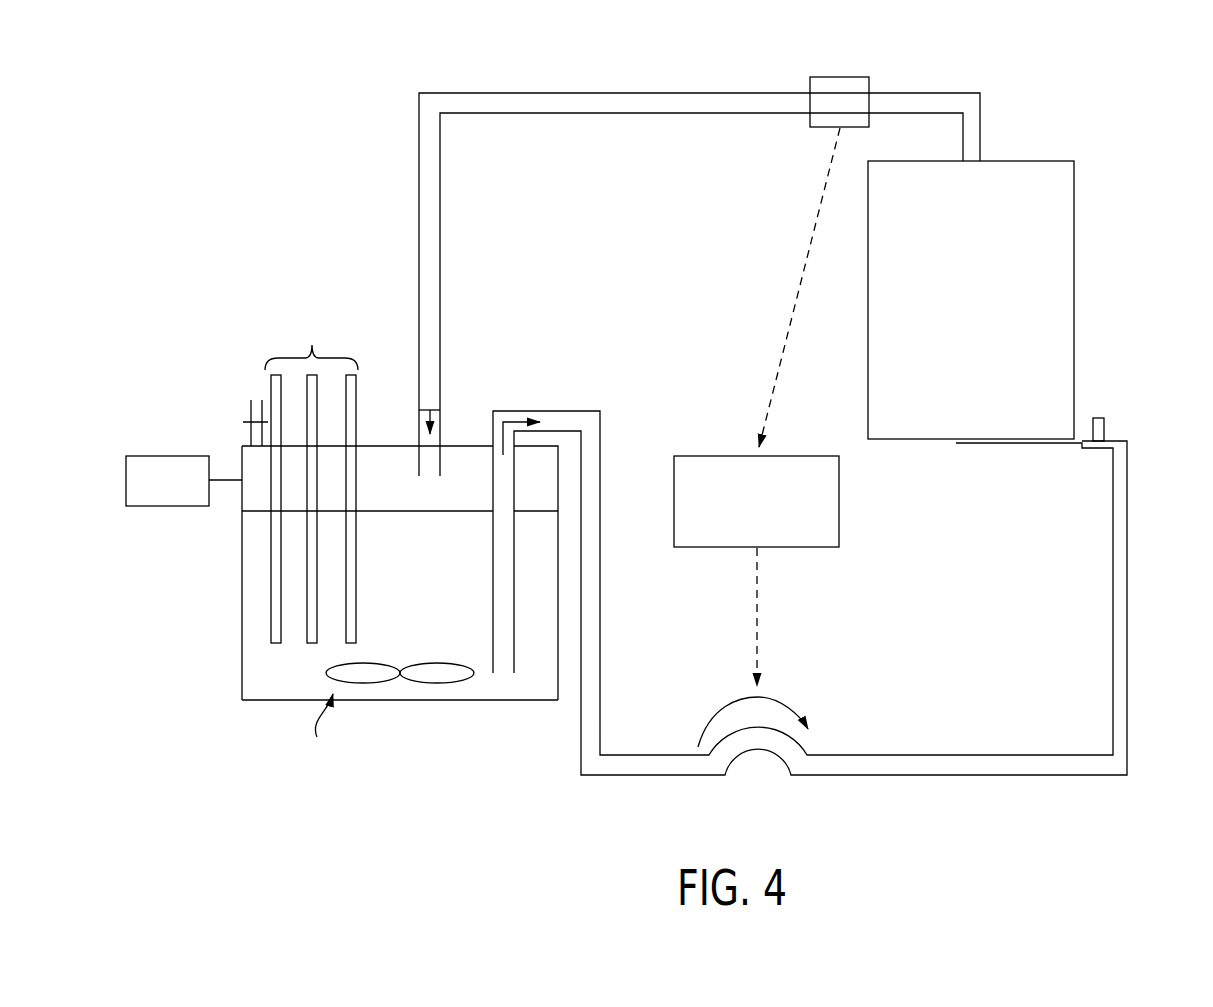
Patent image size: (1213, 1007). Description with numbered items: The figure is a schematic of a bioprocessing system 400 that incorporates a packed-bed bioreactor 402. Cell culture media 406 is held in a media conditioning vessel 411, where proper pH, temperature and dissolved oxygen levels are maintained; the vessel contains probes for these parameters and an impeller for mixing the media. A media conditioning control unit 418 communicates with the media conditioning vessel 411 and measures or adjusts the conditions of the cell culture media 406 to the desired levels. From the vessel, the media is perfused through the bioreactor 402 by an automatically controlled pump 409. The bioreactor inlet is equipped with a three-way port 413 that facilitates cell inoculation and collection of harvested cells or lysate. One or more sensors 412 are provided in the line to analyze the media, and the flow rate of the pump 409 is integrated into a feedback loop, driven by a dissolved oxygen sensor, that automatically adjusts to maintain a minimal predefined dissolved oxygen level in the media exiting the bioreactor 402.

The bioprocessing system 400 is at (213, 126).
The bioreactor 402 is at (1080, 299).
The cell culture media 406 is at (258, 665).
The pump 409 is at (714, 691).
The media conditioning vessel 411 is at (416, 716).
The sensors 412 is at (303, 460).
The bioreactor inlet 3-way port 413 is at (1112, 427).
The media conditioning control unit 418 is at (182, 493).